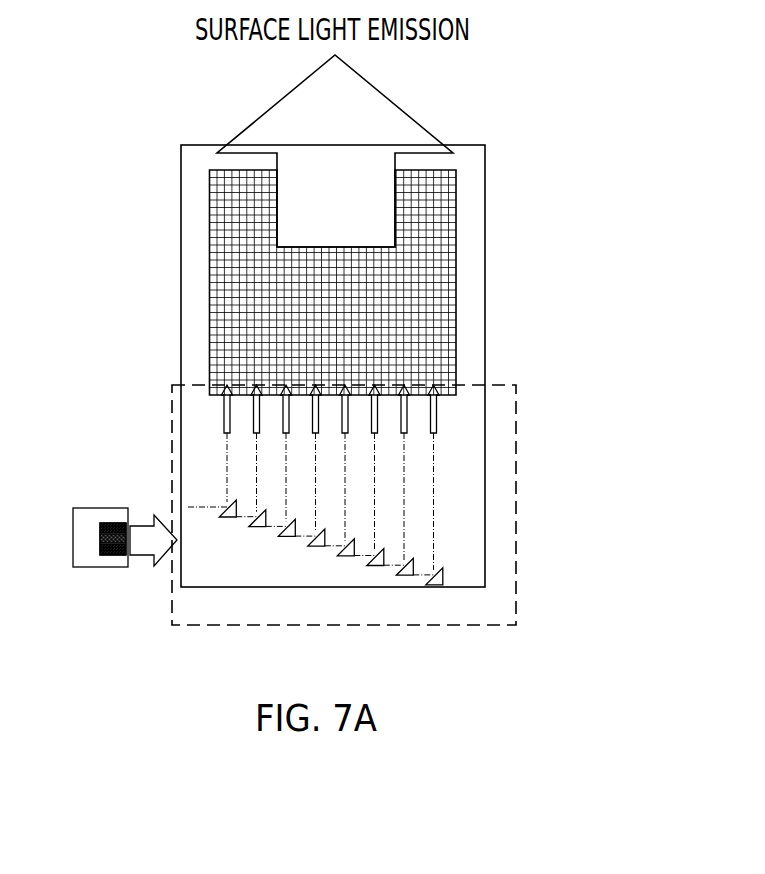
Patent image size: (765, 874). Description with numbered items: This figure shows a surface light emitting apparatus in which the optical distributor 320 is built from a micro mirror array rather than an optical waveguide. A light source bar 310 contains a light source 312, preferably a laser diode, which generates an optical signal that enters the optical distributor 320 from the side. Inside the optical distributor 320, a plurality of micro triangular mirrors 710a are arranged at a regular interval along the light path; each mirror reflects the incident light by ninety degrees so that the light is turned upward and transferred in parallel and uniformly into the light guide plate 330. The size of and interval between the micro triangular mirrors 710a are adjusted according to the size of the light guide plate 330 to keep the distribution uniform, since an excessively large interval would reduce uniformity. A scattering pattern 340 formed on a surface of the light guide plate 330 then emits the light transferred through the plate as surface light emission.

The light source bar 310 is at (91, 518).
The light source 312 is at (115, 553).
The optical distributor 320 is at (516, 487).
The light guide plate 330 is at (478, 269).
The scattering pattern 340 is at (443, 238).
The micro triangular mirrors 710a is at (316, 546).